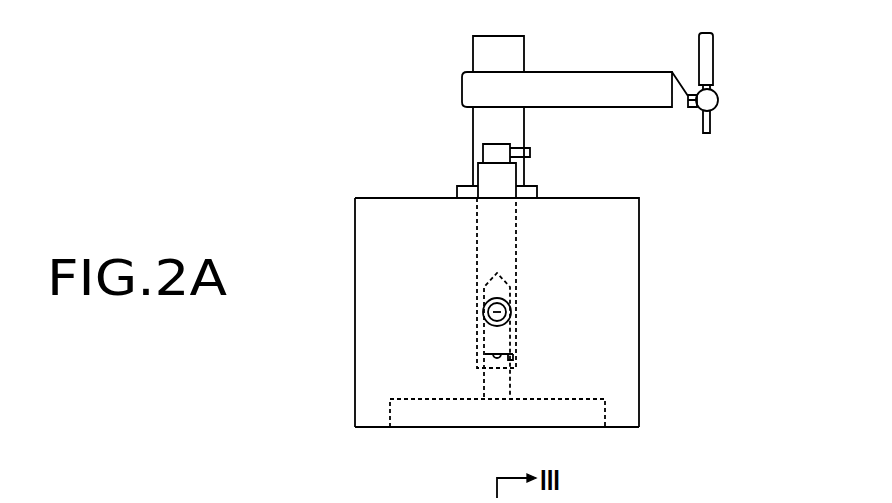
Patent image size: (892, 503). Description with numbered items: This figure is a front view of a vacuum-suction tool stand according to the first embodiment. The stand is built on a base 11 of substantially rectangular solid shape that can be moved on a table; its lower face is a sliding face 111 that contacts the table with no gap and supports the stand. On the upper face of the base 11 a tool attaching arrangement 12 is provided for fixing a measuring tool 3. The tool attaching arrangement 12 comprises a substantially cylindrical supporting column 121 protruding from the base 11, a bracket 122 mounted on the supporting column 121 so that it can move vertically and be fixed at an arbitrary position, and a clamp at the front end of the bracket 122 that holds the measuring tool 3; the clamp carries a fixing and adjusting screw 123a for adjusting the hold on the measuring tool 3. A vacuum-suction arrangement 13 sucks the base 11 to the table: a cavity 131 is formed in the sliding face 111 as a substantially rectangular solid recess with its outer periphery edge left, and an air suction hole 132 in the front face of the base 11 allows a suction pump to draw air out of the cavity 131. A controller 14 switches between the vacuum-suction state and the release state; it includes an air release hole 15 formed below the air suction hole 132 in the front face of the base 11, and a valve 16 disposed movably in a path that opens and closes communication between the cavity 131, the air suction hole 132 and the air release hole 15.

The tool attaching arrangement 12 is at (591, 56).
The supporting column 121 is at (499, 43).
The bracket 122 is at (613, 97).
The fixing and adjusting screw 123a is at (709, 98).
The measuring tool 3 is at (708, 50).
The base 11 is at (360, 285).
The sliding face 111 is at (365, 413).
The vacuum-suction arrangement 13 is at (540, 286).
The valve 16 is at (456, 216).
The controller 14 is at (540, 338).
The air suction hole 132 is at (503, 310).
The air release hole 15 is at (504, 357).
The cavity 131 is at (582, 415).